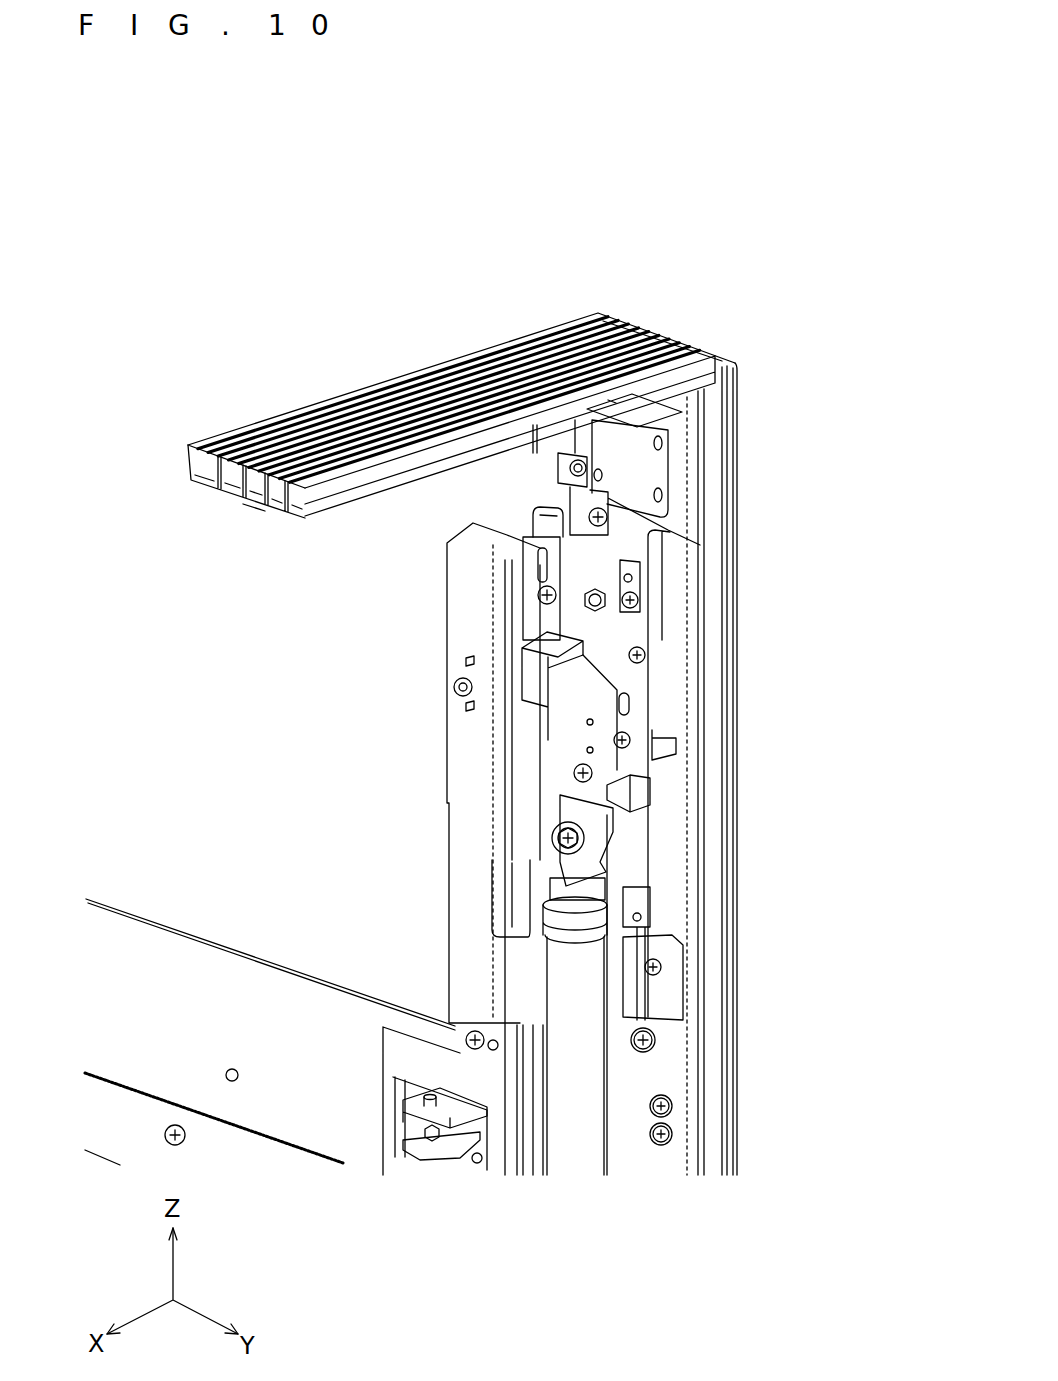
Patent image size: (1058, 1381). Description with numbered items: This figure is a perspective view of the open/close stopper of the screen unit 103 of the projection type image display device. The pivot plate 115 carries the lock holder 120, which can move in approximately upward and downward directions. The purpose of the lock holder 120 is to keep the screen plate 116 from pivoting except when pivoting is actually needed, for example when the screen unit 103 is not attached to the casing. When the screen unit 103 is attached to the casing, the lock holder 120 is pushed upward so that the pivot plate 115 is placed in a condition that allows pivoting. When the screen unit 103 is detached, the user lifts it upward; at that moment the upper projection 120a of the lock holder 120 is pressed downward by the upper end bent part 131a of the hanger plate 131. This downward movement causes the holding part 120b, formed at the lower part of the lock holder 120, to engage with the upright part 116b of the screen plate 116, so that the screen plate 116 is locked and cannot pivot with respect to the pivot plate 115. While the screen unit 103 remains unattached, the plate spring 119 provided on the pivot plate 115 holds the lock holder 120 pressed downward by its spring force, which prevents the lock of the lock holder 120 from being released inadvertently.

The screen unit 103 is at (668, 338).
The pivot plate 115 is at (528, 845).
The screen plate 116 is at (652, 1073).
The upright part 116b is at (640, 788).
The plate spring 119 is at (633, 597).
The lock holder 120 is at (530, 680).
The upper projection 120a is at (530, 555).
The holding part 120b is at (653, 745).
The hanger plate 131 is at (455, 815).
The upper end bent part 131a is at (540, 543).